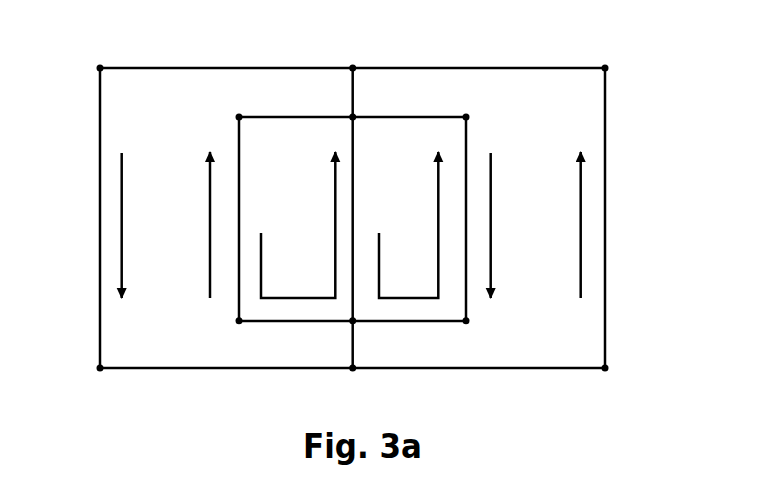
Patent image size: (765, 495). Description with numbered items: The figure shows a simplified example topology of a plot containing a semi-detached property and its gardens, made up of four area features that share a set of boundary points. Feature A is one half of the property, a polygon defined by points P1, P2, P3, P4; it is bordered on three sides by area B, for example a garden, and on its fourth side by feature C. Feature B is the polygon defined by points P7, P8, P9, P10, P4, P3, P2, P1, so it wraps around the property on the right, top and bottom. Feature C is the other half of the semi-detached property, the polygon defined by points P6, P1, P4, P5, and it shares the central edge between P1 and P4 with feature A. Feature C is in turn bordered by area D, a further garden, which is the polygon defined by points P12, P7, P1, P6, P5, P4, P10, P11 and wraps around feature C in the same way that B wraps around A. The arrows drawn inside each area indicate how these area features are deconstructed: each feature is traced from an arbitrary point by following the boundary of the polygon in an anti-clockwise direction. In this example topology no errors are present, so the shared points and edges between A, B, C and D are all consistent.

The point P1 is at (370, 338).
The point P2 is at (482, 338).
The point P3 is at (482, 105).
The point P4 is at (370, 105).
The point P5 is at (222, 105).
The point P6 is at (222, 338).
The point P7 is at (371, 390).
The point P8 is at (625, 390).
The point P9 is at (625, 54).
The point P10 is at (376, 54).
The point P11 is at (79, 54).
The point P12 is at (79, 389).
The property A is at (408, 225).
The garden B is at (536, 225).
The other half of the semi-detached property C is at (298, 225).
The further garden D is at (166, 225).